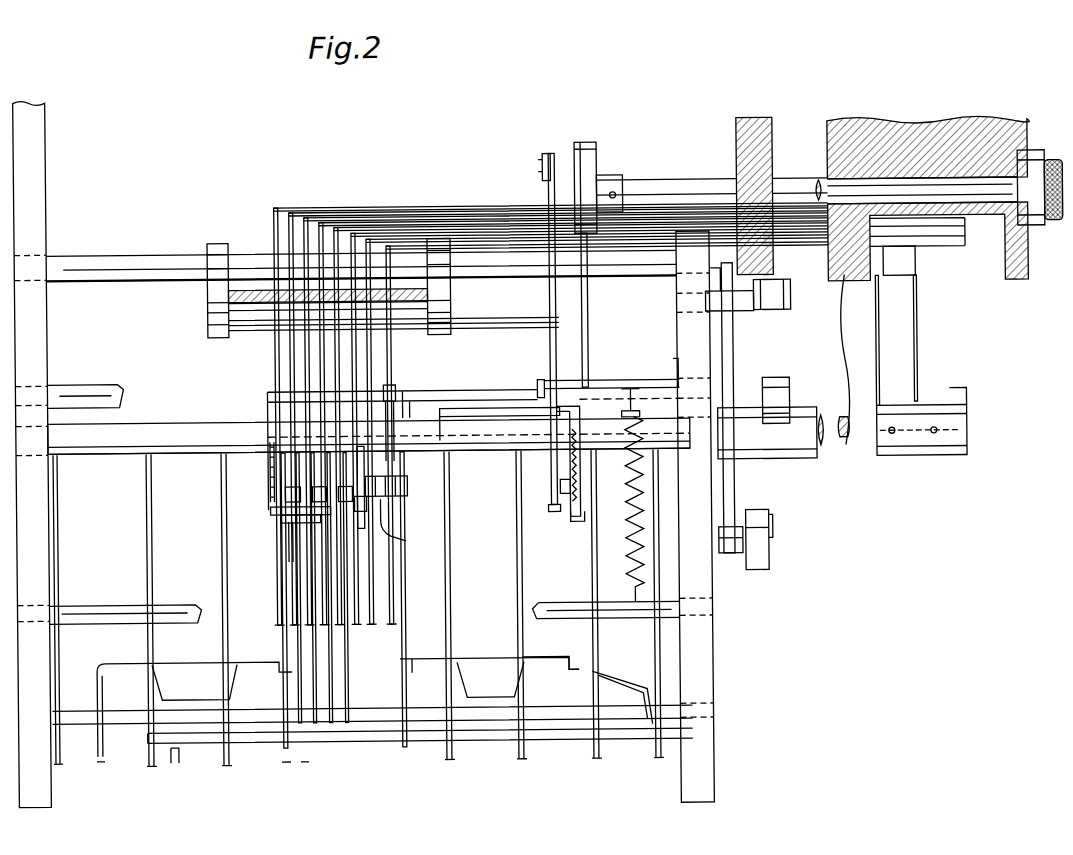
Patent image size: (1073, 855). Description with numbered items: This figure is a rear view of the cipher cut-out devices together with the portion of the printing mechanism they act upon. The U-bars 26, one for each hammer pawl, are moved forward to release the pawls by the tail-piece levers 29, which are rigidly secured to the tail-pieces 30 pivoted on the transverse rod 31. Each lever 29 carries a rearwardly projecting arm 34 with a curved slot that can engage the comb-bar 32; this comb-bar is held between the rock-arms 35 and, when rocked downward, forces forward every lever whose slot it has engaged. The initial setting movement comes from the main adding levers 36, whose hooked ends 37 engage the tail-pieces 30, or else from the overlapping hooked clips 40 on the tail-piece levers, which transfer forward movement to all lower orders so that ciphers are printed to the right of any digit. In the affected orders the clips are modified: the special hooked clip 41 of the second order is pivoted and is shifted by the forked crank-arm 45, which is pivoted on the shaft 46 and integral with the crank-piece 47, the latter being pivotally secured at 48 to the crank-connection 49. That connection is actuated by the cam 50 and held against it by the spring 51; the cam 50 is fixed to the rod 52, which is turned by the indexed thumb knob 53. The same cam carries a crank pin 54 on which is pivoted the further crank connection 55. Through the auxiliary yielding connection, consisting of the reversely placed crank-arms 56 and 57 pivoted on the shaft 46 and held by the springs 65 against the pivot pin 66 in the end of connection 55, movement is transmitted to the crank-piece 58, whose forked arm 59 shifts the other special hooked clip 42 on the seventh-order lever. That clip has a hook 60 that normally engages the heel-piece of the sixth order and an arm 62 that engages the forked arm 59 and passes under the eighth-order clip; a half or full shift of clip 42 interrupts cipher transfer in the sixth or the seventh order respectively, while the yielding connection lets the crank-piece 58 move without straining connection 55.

The U-bars 26 is at (348, 222).
The tail-piece levers 29 is at (306, 238).
The tail-pieces 30 is at (283, 590).
The transverse rod 31 is at (128, 716).
The comb-bar 32 is at (263, 287).
The arm 34 is at (293, 338).
The rock-arms 35 is at (208, 296).
The main adding levers 36 is at (516, 456).
The hooked end 37 is at (58, 765).
The hooked clips 40 is at (284, 493).
The special hooked clip 41 is at (270, 463).
The special hooked clip 42 is at (385, 525).
The forked crank-arm 45 is at (272, 512).
The shaft 46 is at (828, 480).
The crank-piece 47 is at (268, 412).
The pivot 48 is at (397, 393).
The crank-connection 49 is at (605, 390).
The cam 50 is at (585, 142).
The spring 51 is at (627, 553).
The rod 52 is at (800, 182).
The indexed thumb knob 53 is at (1050, 160).
The crank pin 54 is at (557, 160).
The crank connection 55 is at (547, 188).
The crank-arm 56 is at (555, 513).
The crank-arm 57 is at (575, 523).
The crank-piece 58 is at (460, 418).
The forked arm 59 is at (398, 500).
The hook 60 is at (370, 510).
The arm 62 is at (408, 489).
The springs 65 is at (577, 465).
The pivot pin 66 is at (571, 488).